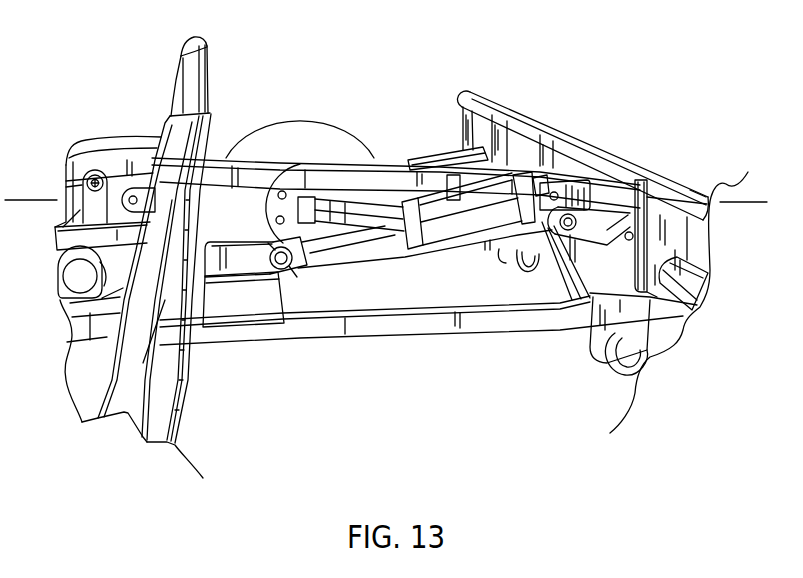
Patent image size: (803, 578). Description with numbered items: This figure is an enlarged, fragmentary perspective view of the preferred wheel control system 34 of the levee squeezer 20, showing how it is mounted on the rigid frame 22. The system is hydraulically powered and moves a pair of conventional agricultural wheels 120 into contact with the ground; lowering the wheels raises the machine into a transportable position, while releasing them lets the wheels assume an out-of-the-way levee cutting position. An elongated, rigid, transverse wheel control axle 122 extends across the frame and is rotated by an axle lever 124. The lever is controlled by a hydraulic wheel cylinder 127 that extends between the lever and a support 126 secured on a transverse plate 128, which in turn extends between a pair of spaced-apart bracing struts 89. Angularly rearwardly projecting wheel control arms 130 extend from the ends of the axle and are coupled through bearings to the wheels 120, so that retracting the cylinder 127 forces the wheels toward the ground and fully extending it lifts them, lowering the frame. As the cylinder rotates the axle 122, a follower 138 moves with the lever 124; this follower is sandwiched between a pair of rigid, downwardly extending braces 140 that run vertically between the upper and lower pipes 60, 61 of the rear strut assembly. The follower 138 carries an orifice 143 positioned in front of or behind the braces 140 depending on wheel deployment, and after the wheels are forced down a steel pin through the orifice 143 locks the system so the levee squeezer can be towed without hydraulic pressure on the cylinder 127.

The levee squeezer 20 is at (535, 104).
The frame 22 is at (214, 149).
The wheel control system 34 is at (449, 160).
The pipe 60 is at (688, 277).
The pipe 61 is at (697, 200).
The bracing struts 89 is at (382, 325).
The wheels 120 is at (325, 133).
The wheel control axle 122 is at (632, 353).
The axle lever 124 is at (557, 187).
The support 126 is at (248, 277).
The hydraulic wheel cylinder 127 is at (473, 217).
The transverse plate 128 is at (270, 296).
The wheel control arms 130 is at (357, 202).
The follower 138 is at (652, 196).
The braces 140 is at (702, 225).
The orifice 143 is at (627, 240).